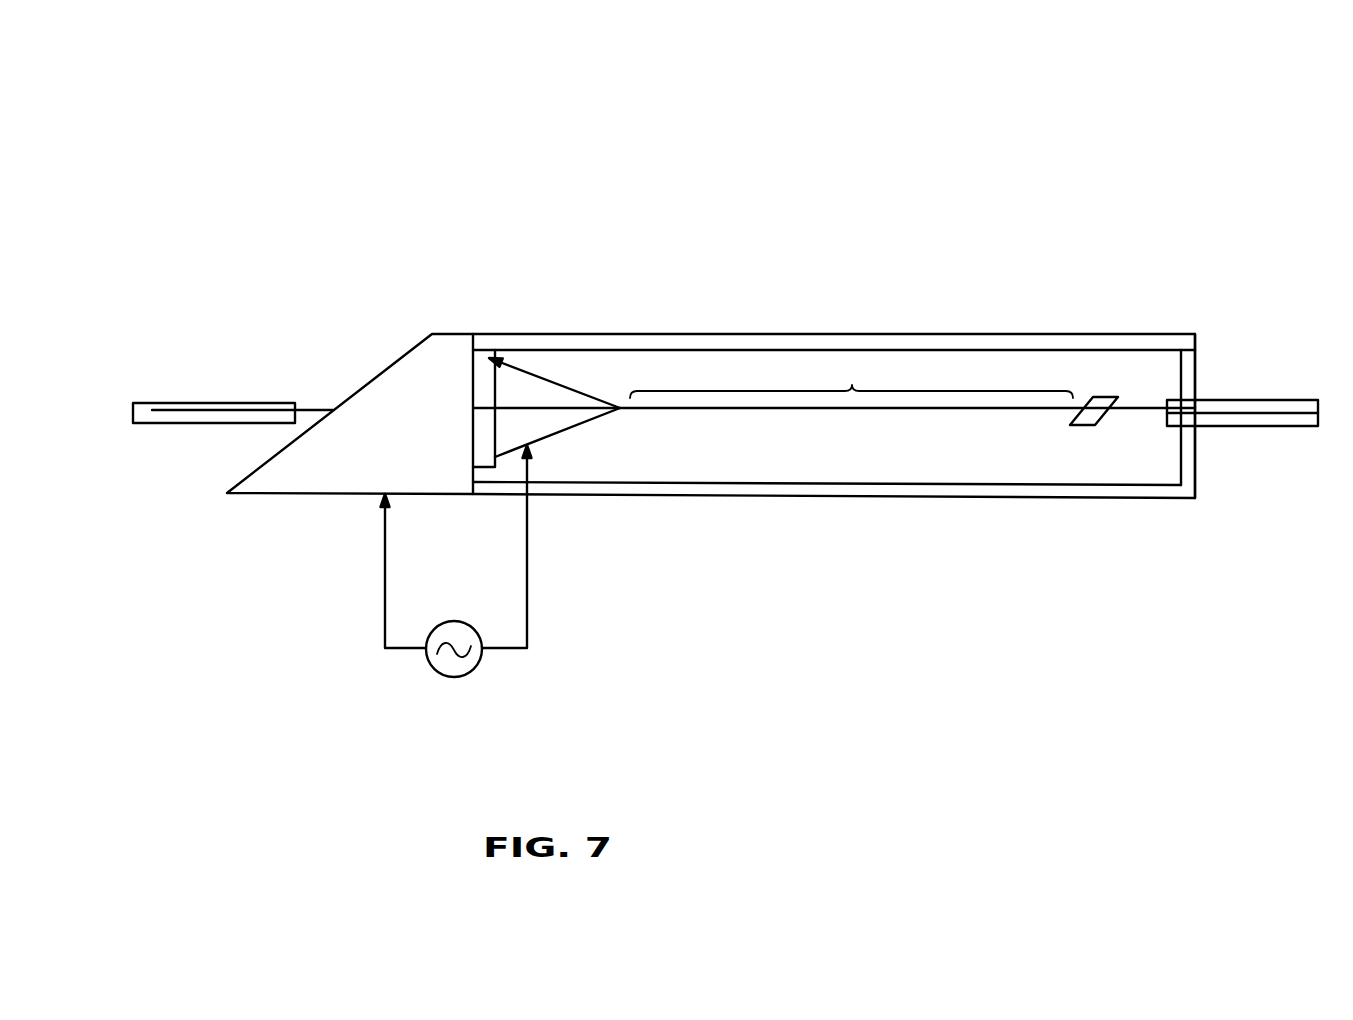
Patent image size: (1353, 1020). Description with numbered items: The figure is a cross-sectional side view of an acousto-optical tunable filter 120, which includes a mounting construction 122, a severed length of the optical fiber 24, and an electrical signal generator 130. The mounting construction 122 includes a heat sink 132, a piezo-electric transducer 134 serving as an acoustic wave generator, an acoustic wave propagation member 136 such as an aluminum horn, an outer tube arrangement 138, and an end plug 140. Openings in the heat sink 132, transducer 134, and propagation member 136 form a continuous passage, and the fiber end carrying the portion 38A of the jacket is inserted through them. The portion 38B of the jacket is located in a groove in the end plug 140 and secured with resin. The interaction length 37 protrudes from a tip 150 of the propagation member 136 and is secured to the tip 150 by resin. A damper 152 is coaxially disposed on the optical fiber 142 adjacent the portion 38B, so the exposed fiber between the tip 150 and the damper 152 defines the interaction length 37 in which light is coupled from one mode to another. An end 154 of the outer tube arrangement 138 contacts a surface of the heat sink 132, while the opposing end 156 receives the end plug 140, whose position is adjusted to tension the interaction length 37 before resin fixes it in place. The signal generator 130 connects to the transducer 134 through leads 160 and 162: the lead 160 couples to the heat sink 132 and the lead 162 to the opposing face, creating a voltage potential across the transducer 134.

The filter 120 is at (150, 160).
The mounting construction 122 is at (634, 302).
The portion of the jacket 38A is at (196, 392).
The portion of the jacket 38B is at (1227, 388).
The optical fiber 24 is at (326, 390).
The heat sink 132 is at (395, 394).
The piezo-electric transducer 134 is at (493, 350).
The end of the outer tube arrangement 154 is at (487, 333).
The second, opposing end of the outer tube arrangement 156 is at (1178, 336).
The end plug 140 is at (1208, 459).
The optical fiber 142 is at (752, 403).
The tip 150 is at (561, 382).
The acoustic wave propagation member 136 is at (568, 443).
The interaction length 37 is at (851, 376).
The damper 152 is at (1099, 380).
The outer tube arrangement 138 is at (1020, 496).
The lead 160 is at (385, 564).
The lead 162 is at (568, 602).
The electrical signal generator 130 is at (508, 675).